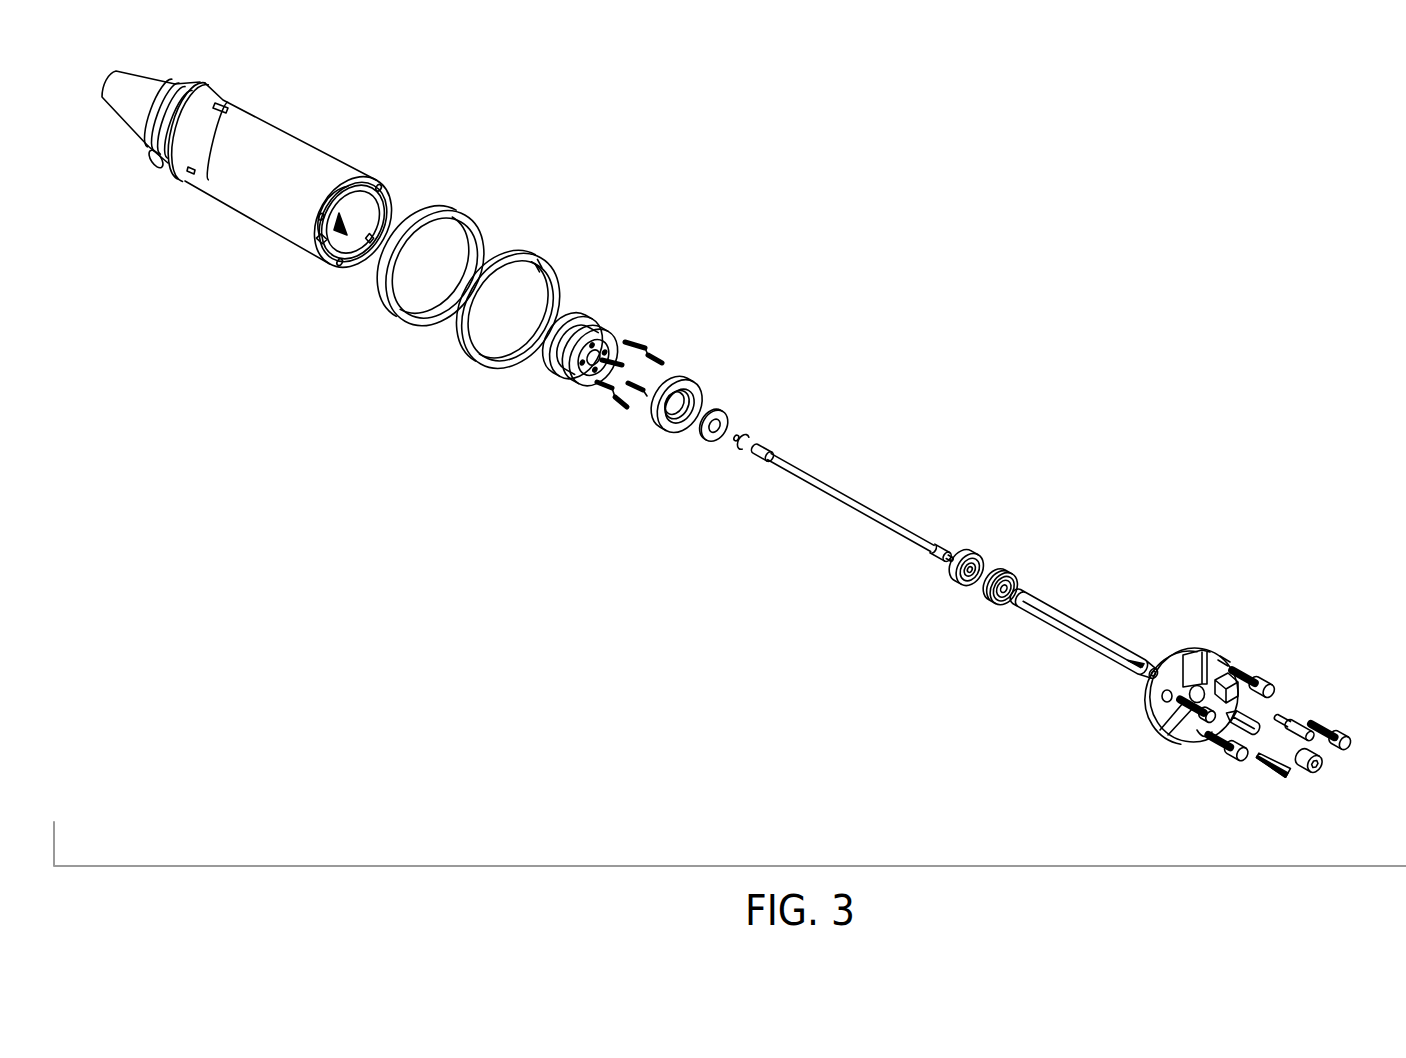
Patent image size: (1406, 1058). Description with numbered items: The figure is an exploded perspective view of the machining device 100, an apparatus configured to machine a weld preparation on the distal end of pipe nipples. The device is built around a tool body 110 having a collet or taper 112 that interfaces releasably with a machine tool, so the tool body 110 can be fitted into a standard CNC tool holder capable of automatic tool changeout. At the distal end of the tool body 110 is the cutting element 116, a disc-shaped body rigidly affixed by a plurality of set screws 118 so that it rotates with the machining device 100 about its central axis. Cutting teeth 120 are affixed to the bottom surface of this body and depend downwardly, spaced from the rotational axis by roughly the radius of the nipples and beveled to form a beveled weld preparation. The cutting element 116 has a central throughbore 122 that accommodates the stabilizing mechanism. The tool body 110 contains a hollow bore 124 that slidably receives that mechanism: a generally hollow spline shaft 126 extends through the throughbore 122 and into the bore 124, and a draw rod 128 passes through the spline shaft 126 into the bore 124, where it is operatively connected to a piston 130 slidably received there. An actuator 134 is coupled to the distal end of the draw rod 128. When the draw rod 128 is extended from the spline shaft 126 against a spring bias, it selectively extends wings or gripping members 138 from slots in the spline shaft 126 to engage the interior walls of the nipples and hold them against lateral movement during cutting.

The machining device 100 is at (669, 237).
The tool body 110 is at (306, 130).
The taper 112 is at (137, 75).
The cutting element 116 is at (1212, 652).
The set screws 118 is at (1228, 757).
The cutting teeth 120 is at (1252, 718).
The throughbore 122 is at (1198, 692).
The bore 124 is at (341, 262).
The spline shaft 126 is at (1079, 622).
The draw rod 128 is at (855, 497).
The piston 130 is at (688, 376).
The actuator 134 is at (1320, 765).
The gripping members 138 is at (1340, 729).